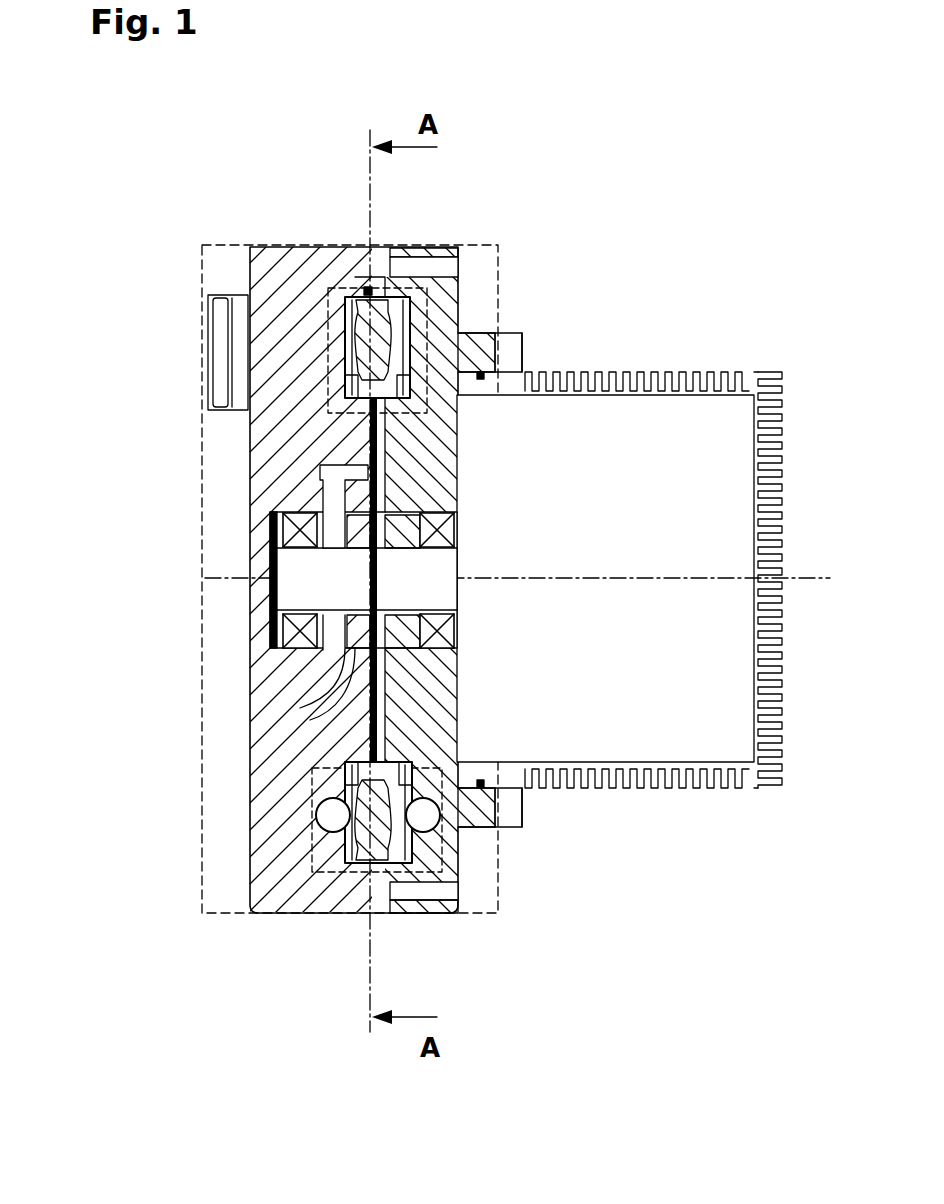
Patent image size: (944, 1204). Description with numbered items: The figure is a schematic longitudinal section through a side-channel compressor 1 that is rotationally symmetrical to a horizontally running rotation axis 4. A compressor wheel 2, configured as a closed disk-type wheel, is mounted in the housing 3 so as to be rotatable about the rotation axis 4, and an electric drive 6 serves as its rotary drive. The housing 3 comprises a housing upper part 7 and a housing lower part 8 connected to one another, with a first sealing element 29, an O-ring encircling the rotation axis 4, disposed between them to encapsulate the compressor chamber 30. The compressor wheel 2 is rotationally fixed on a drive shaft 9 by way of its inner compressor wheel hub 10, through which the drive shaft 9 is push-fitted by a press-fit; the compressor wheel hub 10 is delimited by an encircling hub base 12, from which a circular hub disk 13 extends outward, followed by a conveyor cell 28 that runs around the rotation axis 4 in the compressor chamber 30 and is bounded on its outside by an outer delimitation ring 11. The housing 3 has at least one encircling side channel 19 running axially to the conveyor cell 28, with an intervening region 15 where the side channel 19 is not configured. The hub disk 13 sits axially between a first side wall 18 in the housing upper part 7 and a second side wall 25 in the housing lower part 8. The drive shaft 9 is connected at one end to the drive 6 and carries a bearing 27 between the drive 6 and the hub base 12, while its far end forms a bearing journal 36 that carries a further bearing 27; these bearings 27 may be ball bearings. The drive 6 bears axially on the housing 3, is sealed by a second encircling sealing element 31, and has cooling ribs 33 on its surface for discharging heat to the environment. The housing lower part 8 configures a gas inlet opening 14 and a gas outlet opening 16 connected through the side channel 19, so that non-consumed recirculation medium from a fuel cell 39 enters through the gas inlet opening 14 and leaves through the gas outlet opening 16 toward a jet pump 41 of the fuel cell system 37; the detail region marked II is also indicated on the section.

The side-channel compressor 1 is at (190, 148).
The compressor wheel 2 is at (400, 490).
The housing 3 is at (240, 282).
The rotation axis 4 is at (826, 598).
The drive 6 is at (682, 432).
The housing upper part 7 is at (455, 310).
The housing lower part 8 is at (318, 262).
The drive shaft 9 is at (430, 566).
The compressor wheel hub 10 is at (445, 642).
The outer delimitation ring 11 is at (398, 272).
The hub base 12 is at (352, 652).
The hub disk 13 is at (330, 477).
The gas inlet opening 14 is at (196, 300).
The gas outlet opening 16 is at (228, 352).
The intervening region 15 is at (312, 365).
The first side wall 18 is at (460, 446).
The side channel 19 is at (445, 830).
The second side wall 25 is at (368, 442).
The bearing 27 is at (285, 530).
The conveyor cell 28 is at (368, 802).
The first sealing element 29 is at (368, 288).
The compressor chamber 30 is at (298, 780).
The second sealing element 31 is at (484, 370).
The cooling ribs 33 is at (718, 378).
The bearing journal 36 is at (285, 566).
The fuel cell system 37 is at (90, 361).
The fuel cell 39 is at (168, 332).
The jet pump 41 is at (178, 363).
The detail II is at (338, 833).